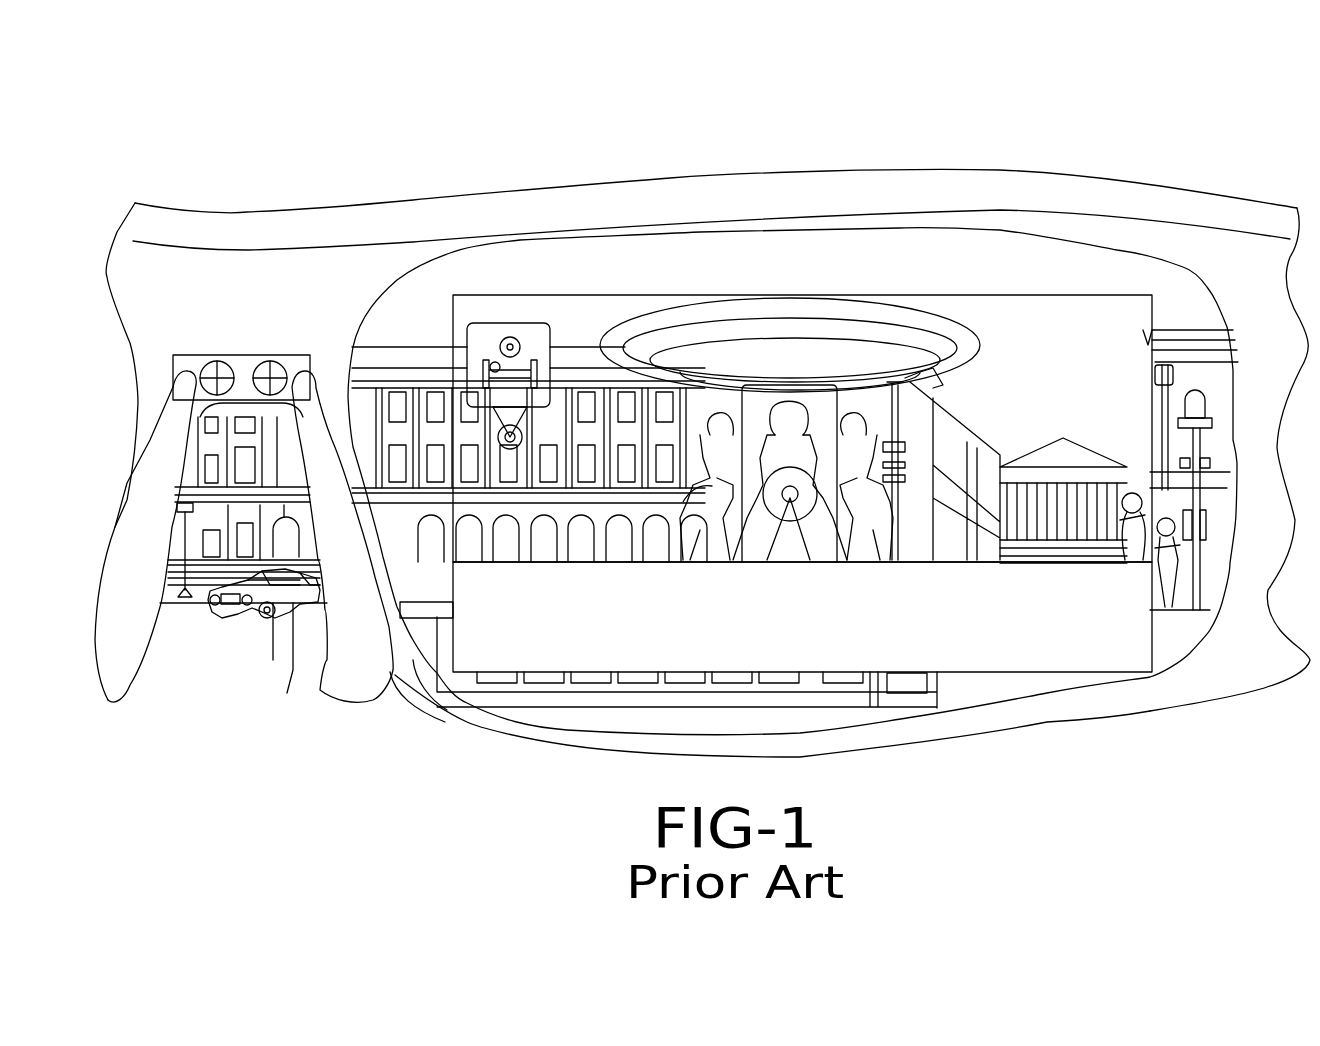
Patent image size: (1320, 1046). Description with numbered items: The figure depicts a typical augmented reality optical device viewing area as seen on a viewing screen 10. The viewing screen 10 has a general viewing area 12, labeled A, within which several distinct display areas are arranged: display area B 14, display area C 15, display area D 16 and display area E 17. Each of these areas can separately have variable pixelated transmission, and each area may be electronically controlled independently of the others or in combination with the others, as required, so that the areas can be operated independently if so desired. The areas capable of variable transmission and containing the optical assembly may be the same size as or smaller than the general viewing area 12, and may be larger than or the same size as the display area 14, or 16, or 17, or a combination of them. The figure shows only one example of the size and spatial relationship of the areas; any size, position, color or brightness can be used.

The viewing screen 10 is at (307, 138).
The general viewing area 12 is at (905, 262).
The display area B 14 is at (1100, 294).
The display area C 15 is at (1020, 673).
The display area D 16 is at (750, 313).
The display area E 17 is at (510, 323).